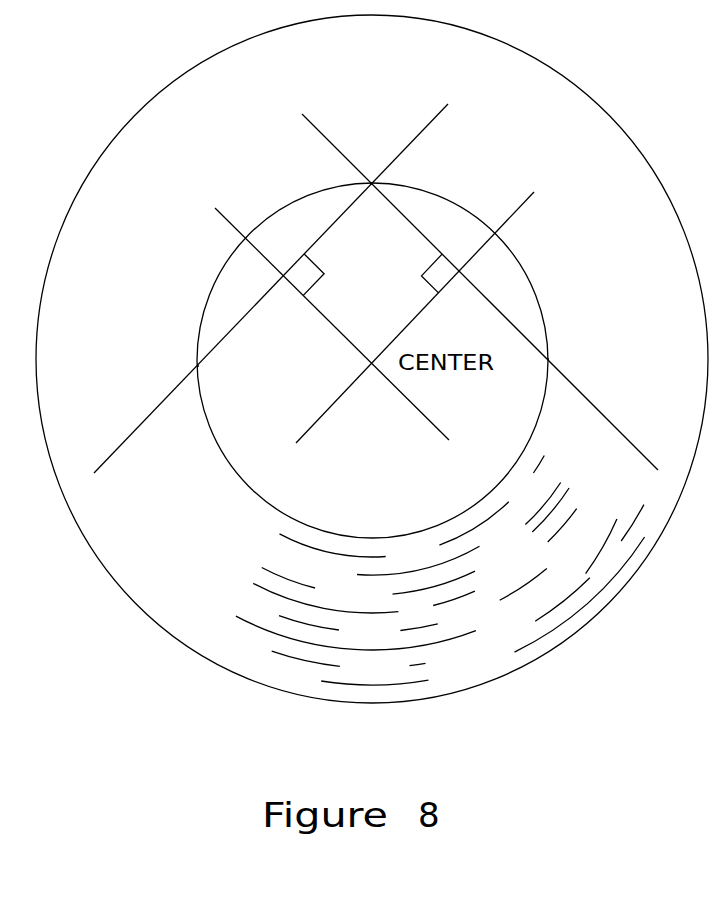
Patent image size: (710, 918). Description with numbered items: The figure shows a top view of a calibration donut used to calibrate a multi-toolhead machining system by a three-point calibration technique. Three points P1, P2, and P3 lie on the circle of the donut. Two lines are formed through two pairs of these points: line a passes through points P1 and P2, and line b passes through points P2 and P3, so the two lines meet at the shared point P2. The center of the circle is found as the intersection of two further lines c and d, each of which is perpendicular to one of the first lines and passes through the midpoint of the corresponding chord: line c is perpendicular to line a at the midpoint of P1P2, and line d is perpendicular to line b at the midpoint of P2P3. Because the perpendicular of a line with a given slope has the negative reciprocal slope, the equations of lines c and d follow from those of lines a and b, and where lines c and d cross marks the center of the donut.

The line a is at (259, 299).
The line b is at (490, 301).
The perpendicular line c is at (339, 337).
The perpendicular line d is at (405, 329).
The point P1 is at (183, 357).
The point P2 is at (371, 160).
The point P3 is at (567, 354).